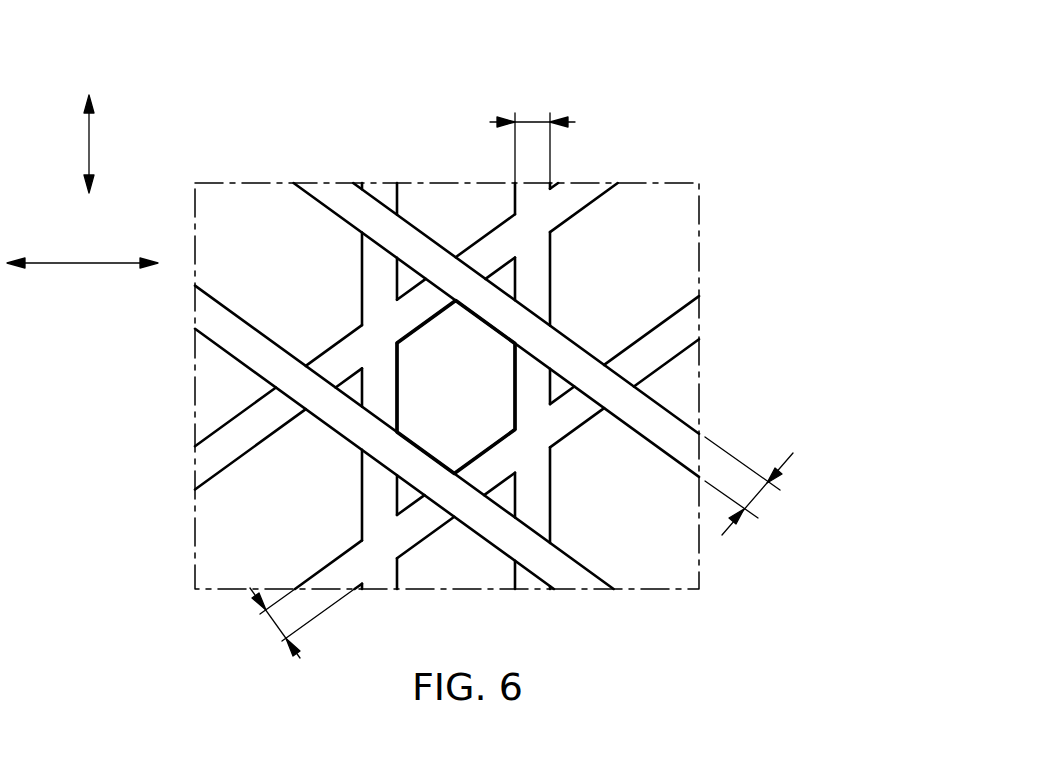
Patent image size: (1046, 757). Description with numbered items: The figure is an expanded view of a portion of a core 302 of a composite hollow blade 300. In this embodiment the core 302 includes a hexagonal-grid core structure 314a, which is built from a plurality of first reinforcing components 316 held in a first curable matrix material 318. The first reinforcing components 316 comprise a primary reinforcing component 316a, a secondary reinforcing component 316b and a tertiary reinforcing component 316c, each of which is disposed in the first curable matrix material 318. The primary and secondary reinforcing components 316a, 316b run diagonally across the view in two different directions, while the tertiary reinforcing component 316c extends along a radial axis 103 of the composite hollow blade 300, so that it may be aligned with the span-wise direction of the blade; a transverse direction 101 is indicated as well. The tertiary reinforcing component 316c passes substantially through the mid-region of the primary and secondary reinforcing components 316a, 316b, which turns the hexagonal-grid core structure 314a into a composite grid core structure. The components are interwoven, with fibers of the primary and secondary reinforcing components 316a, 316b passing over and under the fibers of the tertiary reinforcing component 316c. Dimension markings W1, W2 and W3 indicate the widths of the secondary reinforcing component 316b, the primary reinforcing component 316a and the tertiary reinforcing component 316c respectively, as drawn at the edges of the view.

The composite hollow blade 300 is at (469, 294).
The core 302 is at (236, 538).
The hexagonal-grid core structure 314a is at (652, 257).
The first reinforcing components 316 is at (466, 355).
The primary reinforcing component 316a is at (600, 195).
The secondary reinforcing component 316b is at (430, 238).
The tertiary reinforcing component 316c is at (362, 257).
The first curable matrix material 318 is at (504, 440).
The first direction 101 is at (110, 263).
The radial axis 103 is at (89, 145).
The width of second diagonal line W1 is at (758, 496).
The width of first diagonal line W2 is at (273, 623).
The width of vertical line W3 is at (532, 122).